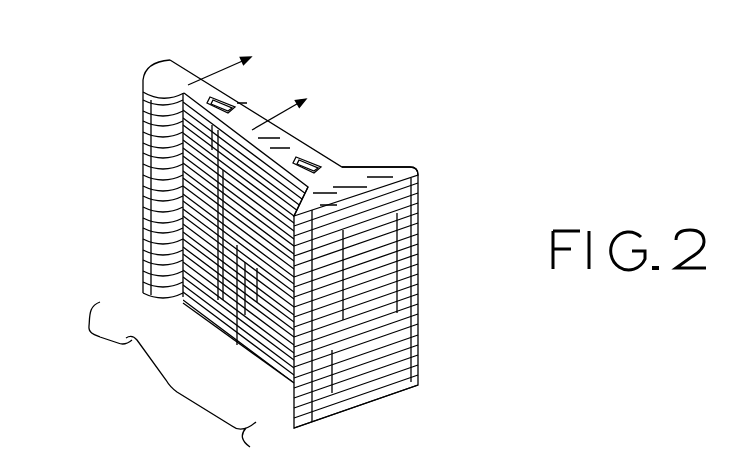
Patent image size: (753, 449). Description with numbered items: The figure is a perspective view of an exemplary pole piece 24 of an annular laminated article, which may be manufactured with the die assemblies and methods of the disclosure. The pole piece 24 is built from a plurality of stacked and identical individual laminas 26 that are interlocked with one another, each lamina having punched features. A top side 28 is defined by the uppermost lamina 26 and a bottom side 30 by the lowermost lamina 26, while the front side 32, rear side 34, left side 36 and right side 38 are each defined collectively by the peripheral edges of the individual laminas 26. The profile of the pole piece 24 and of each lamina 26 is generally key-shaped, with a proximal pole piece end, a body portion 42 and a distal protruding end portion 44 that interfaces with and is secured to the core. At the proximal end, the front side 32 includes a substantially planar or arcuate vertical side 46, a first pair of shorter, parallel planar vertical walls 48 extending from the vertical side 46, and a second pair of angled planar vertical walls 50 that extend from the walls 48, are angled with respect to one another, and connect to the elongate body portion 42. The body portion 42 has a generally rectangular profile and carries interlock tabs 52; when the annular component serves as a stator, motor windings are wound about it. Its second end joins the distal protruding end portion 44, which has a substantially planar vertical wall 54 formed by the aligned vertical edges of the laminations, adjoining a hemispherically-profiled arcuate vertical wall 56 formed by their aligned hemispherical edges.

The pole piece 24 is at (392, 60).
The laminas 26 is at (420, 250).
The top side 28 is at (283, 140).
The bottom side 30 is at (398, 393).
The front side 32 is at (450, 309).
The rear side 34 is at (118, 128).
The left side 36 is at (204, 331).
The right side 38 is at (381, 143).
The body portion 42 is at (191, 391).
The distal protruding end portion 44 is at (92, 326).
The vertical side 46 is at (370, 272).
The parallel planar vertical walls 48 is at (420, 171).
The angled planar vertical walls 50 is at (387, 163).
The interlock tabs 52 is at (220, 100).
The planar vertical wall 54 is at (210, 88).
The arcuate vertical wall 56 is at (143, 82).